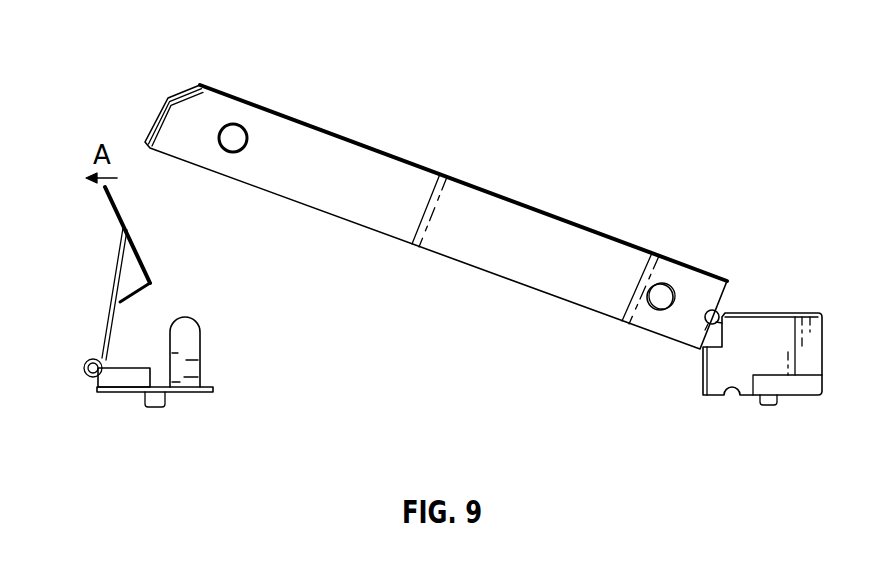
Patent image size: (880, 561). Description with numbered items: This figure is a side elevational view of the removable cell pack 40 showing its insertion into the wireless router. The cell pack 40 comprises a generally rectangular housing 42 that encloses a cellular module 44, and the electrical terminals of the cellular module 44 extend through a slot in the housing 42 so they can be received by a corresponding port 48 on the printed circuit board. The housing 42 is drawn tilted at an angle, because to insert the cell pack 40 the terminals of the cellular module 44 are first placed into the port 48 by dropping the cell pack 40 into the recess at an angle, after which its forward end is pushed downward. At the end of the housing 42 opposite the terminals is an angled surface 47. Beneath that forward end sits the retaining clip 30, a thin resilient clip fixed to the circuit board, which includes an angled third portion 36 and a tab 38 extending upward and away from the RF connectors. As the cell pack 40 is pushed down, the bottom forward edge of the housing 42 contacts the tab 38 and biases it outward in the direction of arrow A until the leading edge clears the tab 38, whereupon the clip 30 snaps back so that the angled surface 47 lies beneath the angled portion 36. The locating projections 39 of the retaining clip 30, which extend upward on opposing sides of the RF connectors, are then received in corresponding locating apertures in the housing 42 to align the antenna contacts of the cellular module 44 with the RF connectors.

The retaining clip 30 is at (149, 297).
The angled third portion 36 is at (138, 295).
The tab 38 is at (136, 240).
The locating projections 39 is at (193, 355).
The removable cell pack 40 is at (454, 186).
The housing 42 is at (385, 176).
The cellular module 44 is at (720, 310).
The angled surface 47 is at (186, 84).
The port 48 is at (778, 325).